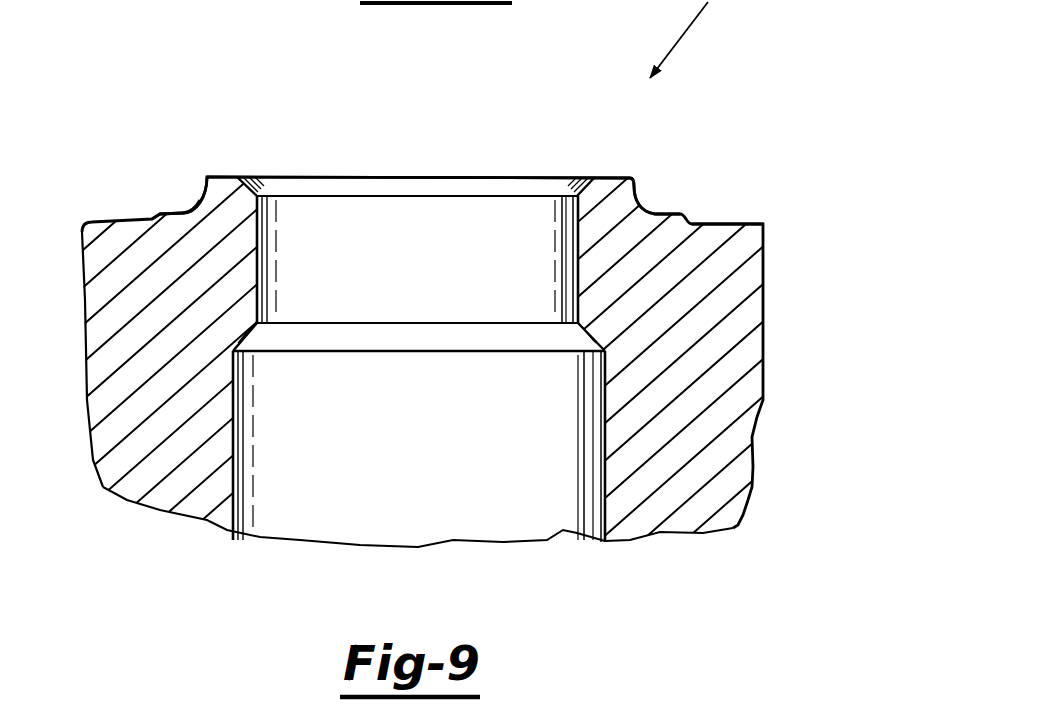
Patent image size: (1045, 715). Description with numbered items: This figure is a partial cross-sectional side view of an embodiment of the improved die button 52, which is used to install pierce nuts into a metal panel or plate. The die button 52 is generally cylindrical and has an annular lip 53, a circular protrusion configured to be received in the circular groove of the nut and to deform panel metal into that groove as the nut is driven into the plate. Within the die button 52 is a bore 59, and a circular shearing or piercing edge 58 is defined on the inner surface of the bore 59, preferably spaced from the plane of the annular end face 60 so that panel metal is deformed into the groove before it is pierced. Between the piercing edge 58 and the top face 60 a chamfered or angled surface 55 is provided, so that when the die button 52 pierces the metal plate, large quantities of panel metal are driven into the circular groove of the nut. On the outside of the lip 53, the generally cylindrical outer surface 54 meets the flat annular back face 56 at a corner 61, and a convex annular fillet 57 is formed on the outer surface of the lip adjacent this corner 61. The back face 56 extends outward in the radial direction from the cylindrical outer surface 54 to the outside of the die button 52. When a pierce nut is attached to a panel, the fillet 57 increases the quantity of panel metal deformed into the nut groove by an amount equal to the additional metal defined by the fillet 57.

The die button 52 is at (770, 302).
The annular lip 53 is at (662, 163).
The cylindrical outer surface 54 is at (198, 184).
The chamfered surface 55 is at (260, 181).
The annular back face 56 is at (720, 223).
The convex annular fillet 57 is at (165, 212).
The piercing edge 58 is at (350, 197).
The bore 59 is at (433, 250).
The annular end face 60 is at (212, 176).
The corner 61 is at (186, 205).